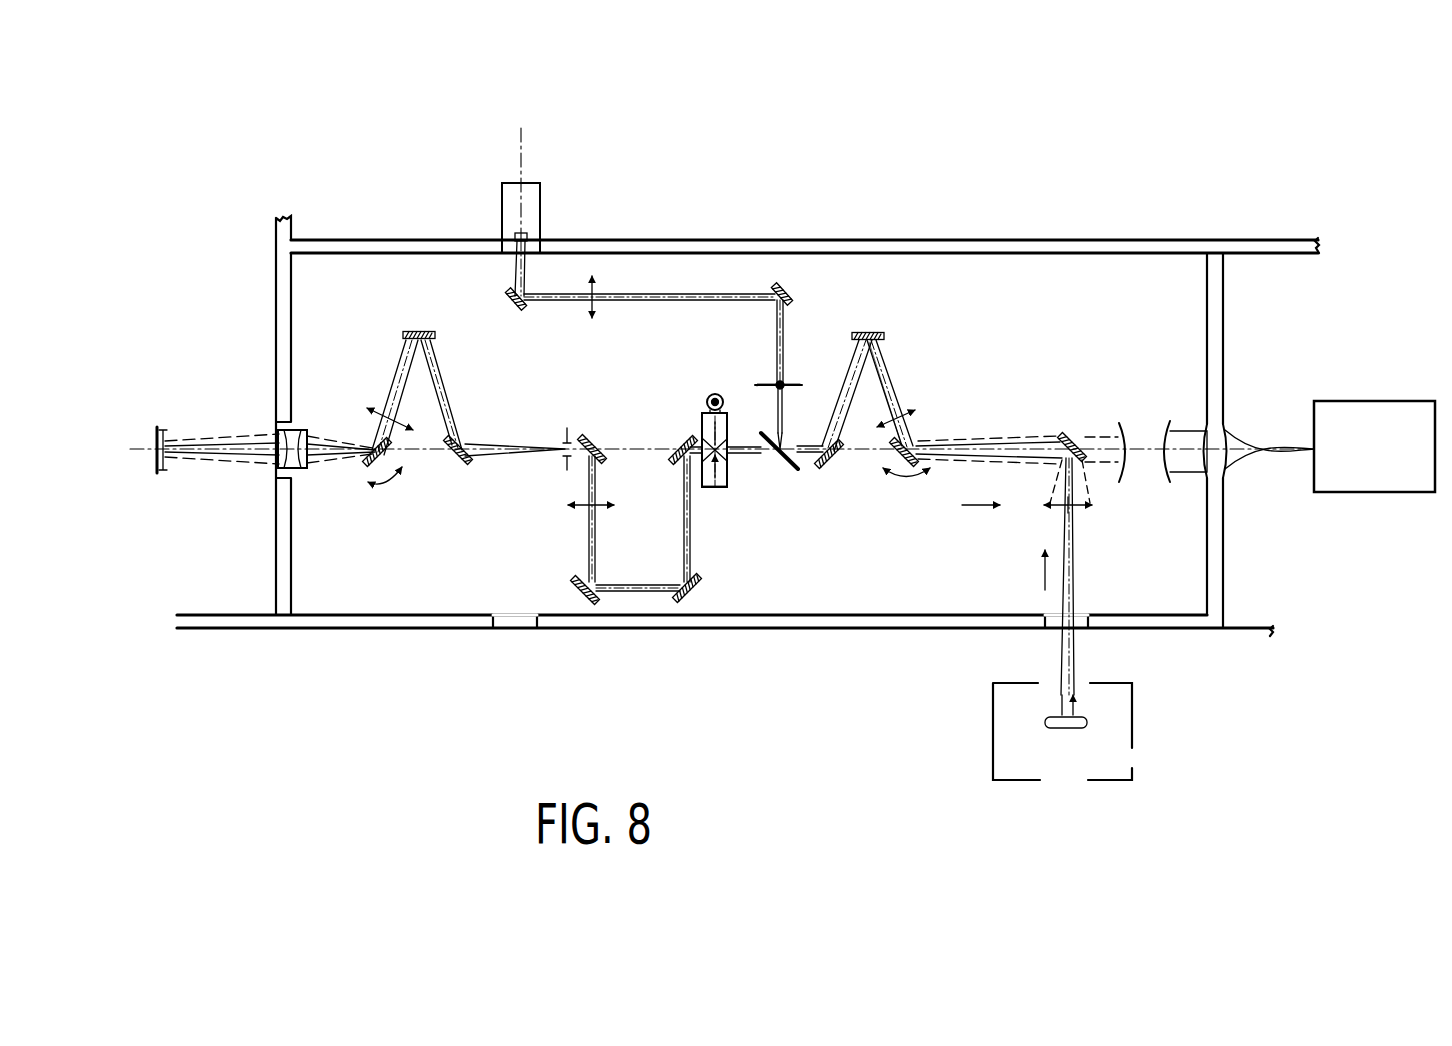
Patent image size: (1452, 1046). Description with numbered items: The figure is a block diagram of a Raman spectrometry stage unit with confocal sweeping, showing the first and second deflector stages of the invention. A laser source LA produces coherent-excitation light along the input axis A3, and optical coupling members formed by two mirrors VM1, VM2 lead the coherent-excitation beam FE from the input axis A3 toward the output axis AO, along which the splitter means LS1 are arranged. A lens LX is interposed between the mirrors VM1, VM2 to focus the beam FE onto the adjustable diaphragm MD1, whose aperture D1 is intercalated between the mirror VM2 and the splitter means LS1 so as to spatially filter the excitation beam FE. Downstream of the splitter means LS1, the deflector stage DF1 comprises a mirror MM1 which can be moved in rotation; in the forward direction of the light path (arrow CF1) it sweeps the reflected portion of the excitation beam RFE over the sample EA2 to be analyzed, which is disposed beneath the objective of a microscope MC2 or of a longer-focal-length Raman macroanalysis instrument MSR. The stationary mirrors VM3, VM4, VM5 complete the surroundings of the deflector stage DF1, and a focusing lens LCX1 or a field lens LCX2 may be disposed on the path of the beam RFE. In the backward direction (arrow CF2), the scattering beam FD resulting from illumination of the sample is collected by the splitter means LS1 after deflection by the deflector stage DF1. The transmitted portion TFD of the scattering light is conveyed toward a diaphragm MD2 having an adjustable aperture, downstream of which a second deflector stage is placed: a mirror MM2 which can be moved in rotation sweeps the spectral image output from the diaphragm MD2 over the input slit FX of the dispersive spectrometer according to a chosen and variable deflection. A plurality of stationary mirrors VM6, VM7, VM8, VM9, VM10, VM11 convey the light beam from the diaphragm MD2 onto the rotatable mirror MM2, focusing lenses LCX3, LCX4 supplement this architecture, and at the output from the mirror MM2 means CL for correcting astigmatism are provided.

The input axis A3 is at (520, 167).
The laser source LA is at (540, 183).
The coherent-excitation beam FE is at (546, 303).
The mirror VM1 is at (510, 299).
The mirror VM2 is at (788, 292).
The stationary mirror VM3 is at (830, 468).
The stationary mirror VM4 is at (876, 333).
The stationary mirror VM5 is at (1071, 433).
The stationary mirror VM6 is at (673, 438).
The stationary mirror VM7 is at (700, 590).
The stationary mirror VM8 is at (576, 596).
The stationary mirror VM9 is at (596, 437).
The stationary mirror VM10 is at (460, 466).
The stationary mirror VM11 is at (417, 332).
The lens LX is at (595, 310).
The adjustable diaphragm MD1 is at (760, 385).
The diaphragm aperture D1 is at (783, 382).
The reflected portion of the coherent-excitation beam RFE is at (803, 442).
The splitter means LS1 is at (790, 470).
The deflector stage DF1 is at (922, 389).
The mirror which can be moved in rotation MM1 is at (905, 472).
The mirror which can be moved in rotation MM2 is at (378, 466).
The focusing lens LCX1 is at (929, 406).
The field lens LCX2 is at (1102, 475).
The focusing lens LCX3 is at (572, 507).
The focusing lens LCX4 is at (360, 405).
The forward direction arrow CF1 is at (981, 488).
The backward direction arrow CF2 is at (1022, 572).
The output axis AO is at (1186, 440).
The Raman macroanalysis instrument MSR is at (1374, 446).
The scattering beam FD is at (1076, 690).
The sample EA2 is at (1083, 746).
The microscope MC2 is at (1132, 756).
The input slit FX is at (158, 427).
The means for correcting astigmatism CL is at (300, 468).
The transmitted portion of the scattering beam TFD is at (750, 455).
The diaphragm MD2 is at (715, 488).